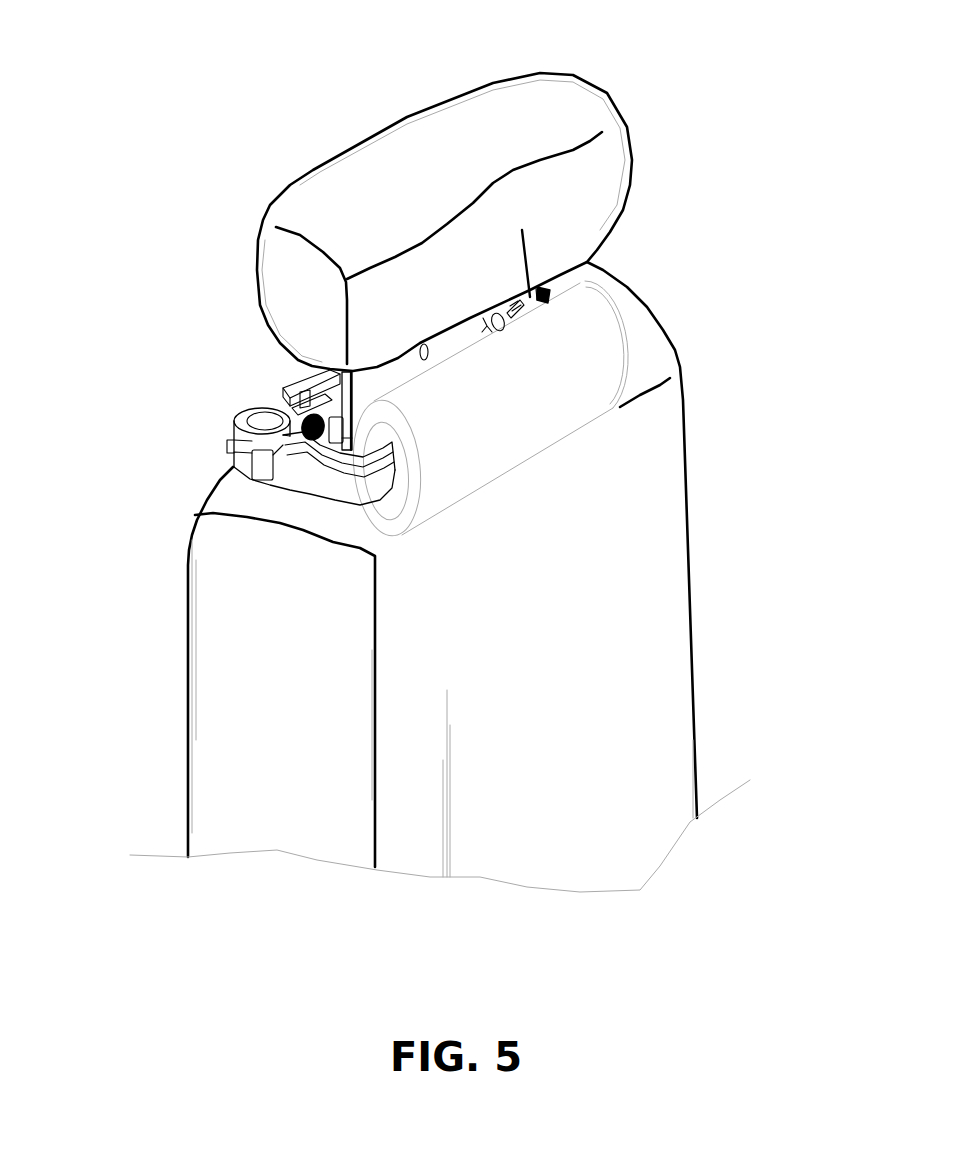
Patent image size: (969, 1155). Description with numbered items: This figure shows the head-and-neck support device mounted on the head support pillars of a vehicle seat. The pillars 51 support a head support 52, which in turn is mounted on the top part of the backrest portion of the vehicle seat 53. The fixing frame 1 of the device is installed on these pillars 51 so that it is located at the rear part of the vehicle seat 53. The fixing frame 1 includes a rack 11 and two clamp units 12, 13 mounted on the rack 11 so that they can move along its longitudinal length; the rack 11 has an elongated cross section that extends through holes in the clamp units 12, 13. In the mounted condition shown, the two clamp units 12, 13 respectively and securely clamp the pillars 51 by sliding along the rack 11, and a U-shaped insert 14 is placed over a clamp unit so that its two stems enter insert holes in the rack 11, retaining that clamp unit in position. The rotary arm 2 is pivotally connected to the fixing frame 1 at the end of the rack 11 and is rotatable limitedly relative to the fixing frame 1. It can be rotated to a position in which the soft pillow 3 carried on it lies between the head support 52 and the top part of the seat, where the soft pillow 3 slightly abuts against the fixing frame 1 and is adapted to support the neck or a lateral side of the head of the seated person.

The fixing frame 1 is at (373, 13).
The rack 11 is at (447, 340).
The clamp unit 12 is at (325, 390).
The clamp unit 13 is at (502, 305).
The U-shaped insert 14 is at (298, 383).
The rotary arm 2 is at (313, 483).
The soft pillow 3 is at (577, 360).
The pillar 51 is at (522, 230).
The head support 52 is at (595, 178).
The vehicle seat 53 is at (647, 470).